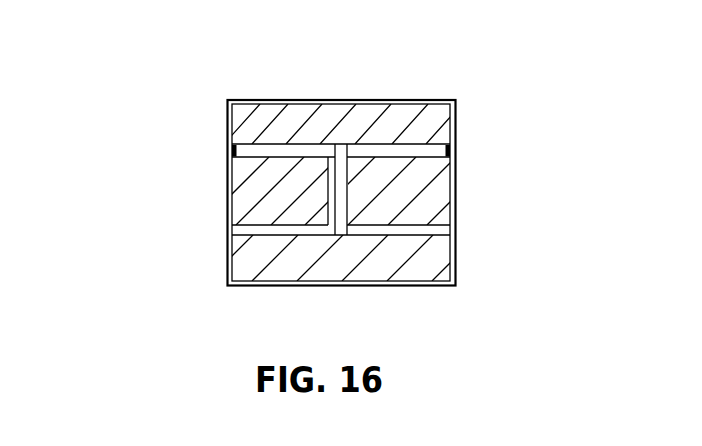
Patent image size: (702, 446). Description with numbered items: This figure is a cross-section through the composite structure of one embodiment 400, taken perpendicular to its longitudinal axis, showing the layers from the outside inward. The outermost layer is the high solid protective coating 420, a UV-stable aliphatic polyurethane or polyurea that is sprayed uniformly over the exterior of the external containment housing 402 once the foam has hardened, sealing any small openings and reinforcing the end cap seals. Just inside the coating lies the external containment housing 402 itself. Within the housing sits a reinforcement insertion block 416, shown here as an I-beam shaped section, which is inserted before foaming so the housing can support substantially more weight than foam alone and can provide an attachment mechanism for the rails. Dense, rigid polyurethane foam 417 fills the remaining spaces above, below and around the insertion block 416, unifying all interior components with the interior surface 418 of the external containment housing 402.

The embodiment 400 is at (506, 78).
The external containment housing 402 is at (451, 252).
The reinforcement insertion block 416 is at (231, 151).
The foam 417 is at (279, 118).
The interior surface 418 is at (290, 277).
The high solid protective coating 420 is at (455, 194).